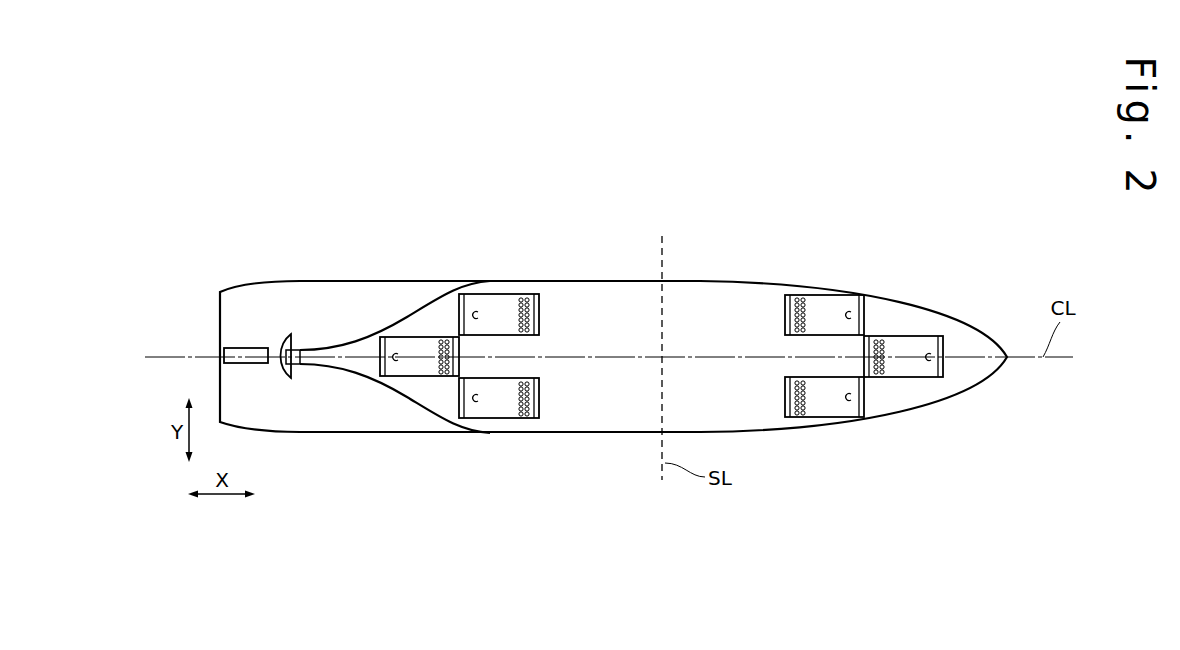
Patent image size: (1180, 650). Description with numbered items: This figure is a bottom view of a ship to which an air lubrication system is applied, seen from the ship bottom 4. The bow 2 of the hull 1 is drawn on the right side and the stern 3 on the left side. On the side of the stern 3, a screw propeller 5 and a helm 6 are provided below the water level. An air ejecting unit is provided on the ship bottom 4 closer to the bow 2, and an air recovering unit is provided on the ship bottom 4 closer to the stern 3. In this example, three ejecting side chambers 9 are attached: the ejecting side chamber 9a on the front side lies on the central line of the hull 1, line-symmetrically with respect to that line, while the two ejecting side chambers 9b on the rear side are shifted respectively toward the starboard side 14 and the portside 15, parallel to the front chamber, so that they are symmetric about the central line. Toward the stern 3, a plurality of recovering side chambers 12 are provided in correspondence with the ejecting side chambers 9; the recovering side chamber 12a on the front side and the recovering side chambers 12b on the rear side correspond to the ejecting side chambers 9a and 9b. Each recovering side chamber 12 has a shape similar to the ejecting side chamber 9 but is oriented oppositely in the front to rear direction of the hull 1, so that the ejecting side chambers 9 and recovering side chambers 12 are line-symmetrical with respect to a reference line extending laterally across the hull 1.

The hull 1 is at (991, 218).
The bow 2 is at (1006, 350).
The stern 3 is at (220, 328).
The ship bottom 4 is at (618, 397).
The screw propeller 5 is at (284, 335).
The helm 6 is at (255, 350).
The ejecting side chambers 9 is at (868, 253).
The ejecting side chamber on the front side 9a is at (908, 340).
The ejecting side chambers on the rear side 9b is at (815, 296).
The recovering side chambers 12 is at (455, 250).
The recovering side chamber on the front side 12a is at (417, 338).
The recovering side chambers on the rear side 12b is at (508, 295).
The starboard side 14 is at (631, 281).
The portside 15 is at (631, 432).